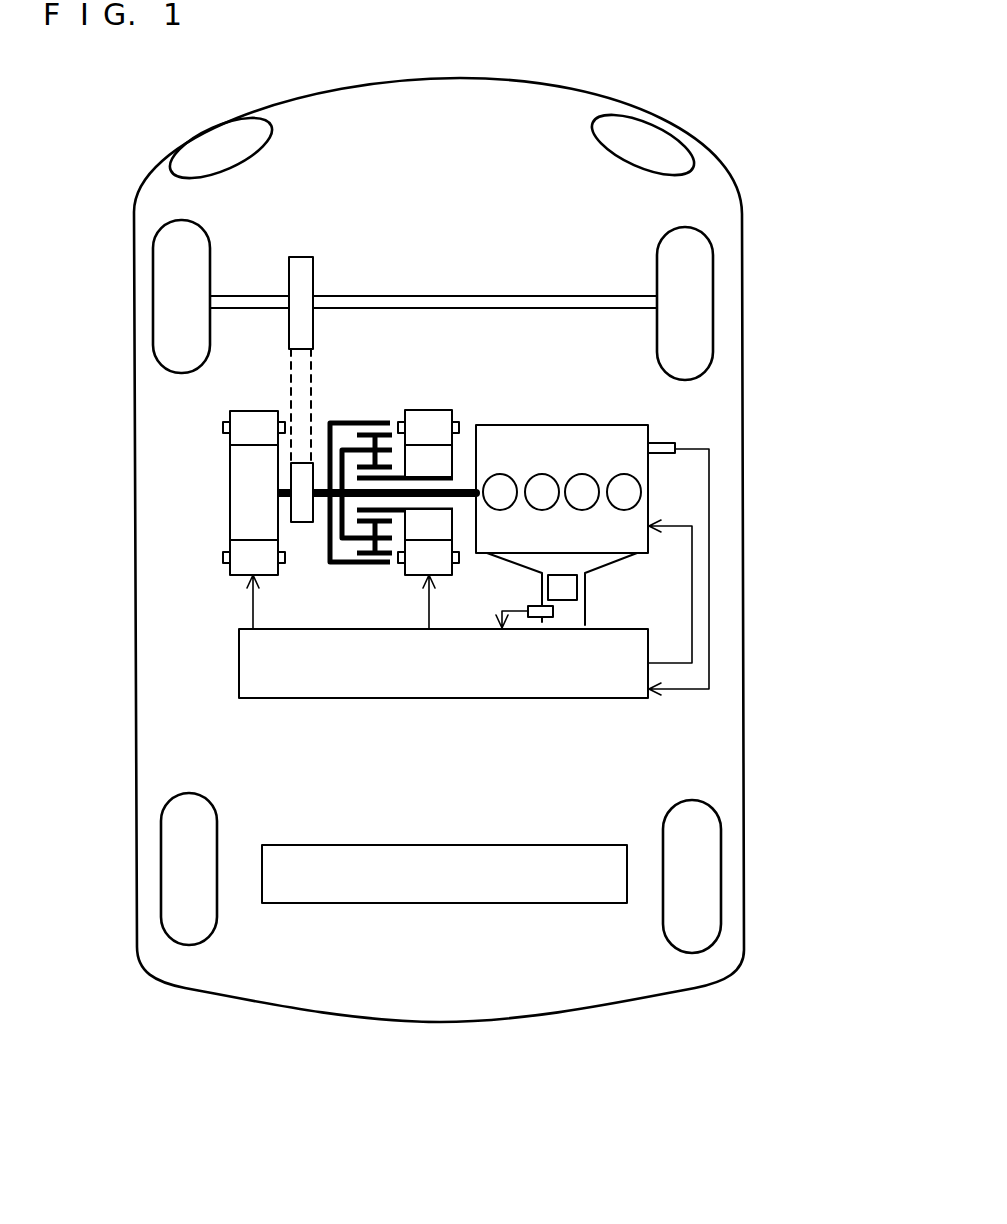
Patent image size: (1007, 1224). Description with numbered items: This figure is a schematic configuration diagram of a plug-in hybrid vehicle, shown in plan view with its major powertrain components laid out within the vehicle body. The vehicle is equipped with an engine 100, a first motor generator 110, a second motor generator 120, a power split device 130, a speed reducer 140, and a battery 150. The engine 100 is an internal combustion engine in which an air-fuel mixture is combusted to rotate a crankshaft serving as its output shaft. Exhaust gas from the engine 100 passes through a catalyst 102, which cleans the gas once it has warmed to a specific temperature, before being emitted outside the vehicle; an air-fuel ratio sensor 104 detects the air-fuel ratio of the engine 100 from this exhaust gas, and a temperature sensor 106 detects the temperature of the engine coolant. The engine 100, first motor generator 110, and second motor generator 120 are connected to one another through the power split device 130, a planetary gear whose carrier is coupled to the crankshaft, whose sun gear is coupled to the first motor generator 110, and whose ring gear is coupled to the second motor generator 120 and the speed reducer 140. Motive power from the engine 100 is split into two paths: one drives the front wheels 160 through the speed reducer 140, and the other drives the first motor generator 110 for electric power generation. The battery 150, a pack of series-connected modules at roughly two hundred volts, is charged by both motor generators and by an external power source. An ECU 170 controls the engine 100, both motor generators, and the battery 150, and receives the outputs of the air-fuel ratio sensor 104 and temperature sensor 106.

The engine 100 is at (512, 425).
The catalyst 102 is at (577, 588).
The air-fuel ratio sensor 104 is at (553, 612).
The temperature sensor 106 is at (676, 444).
The first motor generator 110 is at (430, 410).
The second motor generator 120 is at (230, 492).
The power split device 130 is at (362, 423).
The speed reducer 140 is at (302, 238).
The battery 150 is at (413, 903).
The front wheels 160 is at (153, 307).
The ECU 170 is at (239, 670).